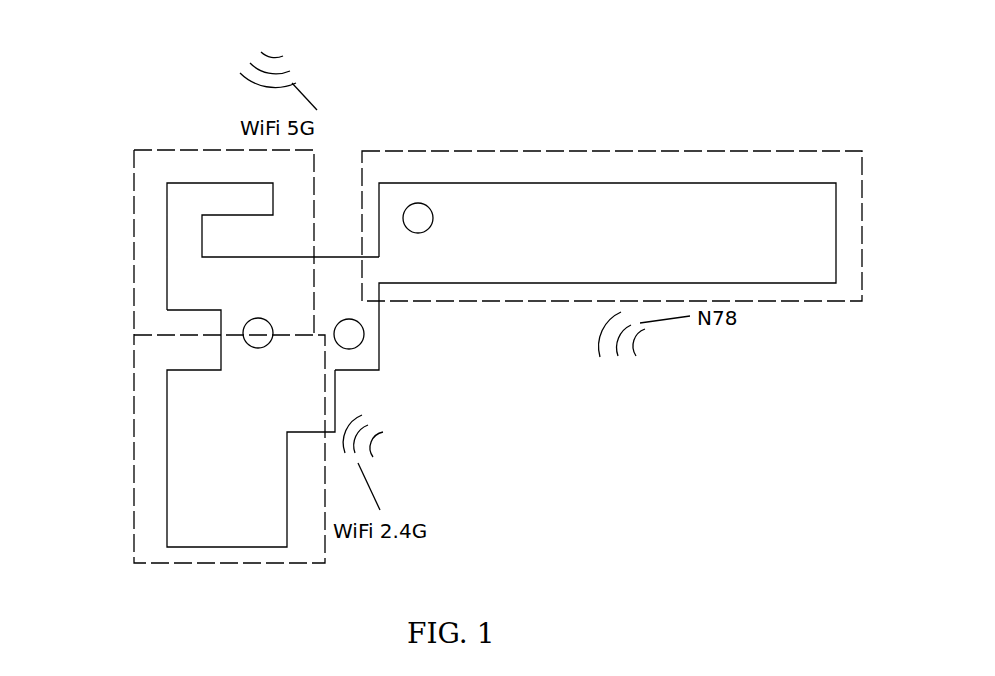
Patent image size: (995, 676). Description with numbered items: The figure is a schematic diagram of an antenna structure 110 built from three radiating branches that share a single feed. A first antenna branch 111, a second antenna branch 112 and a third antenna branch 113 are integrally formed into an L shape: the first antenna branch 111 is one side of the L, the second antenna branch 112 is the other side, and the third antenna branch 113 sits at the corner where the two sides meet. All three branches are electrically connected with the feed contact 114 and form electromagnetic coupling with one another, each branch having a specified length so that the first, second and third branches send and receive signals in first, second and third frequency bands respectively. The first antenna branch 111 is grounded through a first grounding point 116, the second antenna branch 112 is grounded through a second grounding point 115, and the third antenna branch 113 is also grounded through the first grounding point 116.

The antenna assembly 110 is at (87, 54).
The first antenna branch 111 is at (155, 448).
The second antenna branch 112 is at (640, 172).
The third antenna branch 113 is at (155, 317).
The feed contact 114 is at (349, 334).
The second grounding point 115 is at (418, 218).
The first grounding point 116 is at (258, 333).